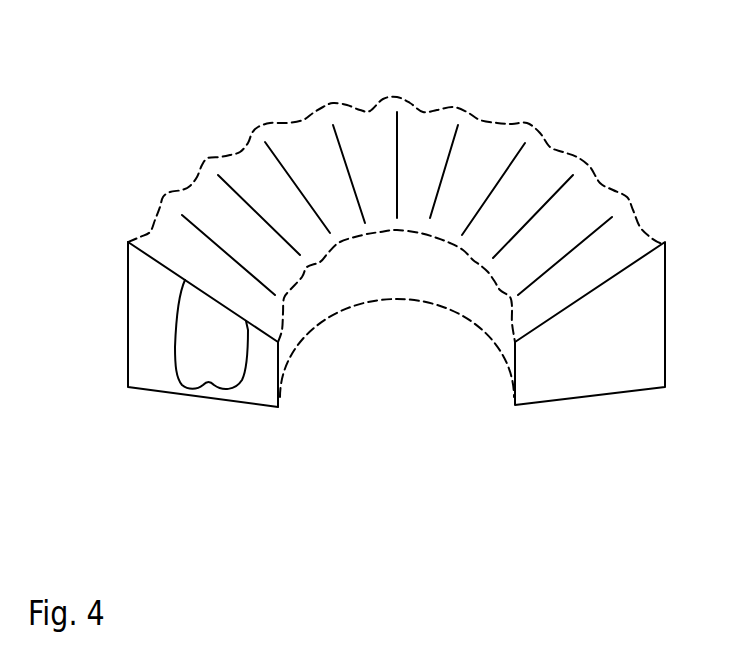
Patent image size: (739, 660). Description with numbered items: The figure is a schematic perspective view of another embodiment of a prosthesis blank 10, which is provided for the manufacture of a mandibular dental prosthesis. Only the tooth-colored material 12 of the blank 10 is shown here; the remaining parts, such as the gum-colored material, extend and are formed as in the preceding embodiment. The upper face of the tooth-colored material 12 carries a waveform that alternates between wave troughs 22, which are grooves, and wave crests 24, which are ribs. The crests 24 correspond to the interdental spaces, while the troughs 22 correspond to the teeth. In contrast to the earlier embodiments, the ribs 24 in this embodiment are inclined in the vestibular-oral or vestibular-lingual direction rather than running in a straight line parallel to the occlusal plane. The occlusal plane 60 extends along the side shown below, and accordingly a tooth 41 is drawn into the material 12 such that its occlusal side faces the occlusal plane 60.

The blank 10 is at (335, 495).
The tooth-colored material 12 is at (692, 308).
The wave troughs 22 is at (633, 162).
The wave crests 24 is at (603, 120).
The tooth 41 is at (197, 350).
The occlusal plane 60 is at (183, 457).